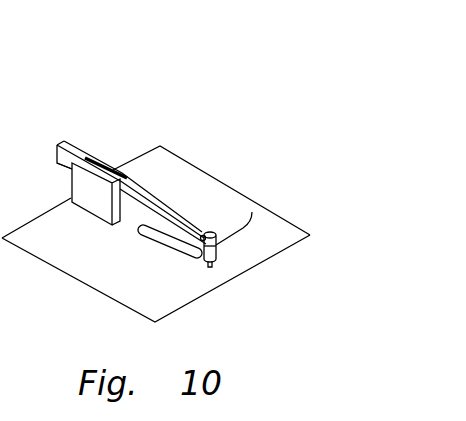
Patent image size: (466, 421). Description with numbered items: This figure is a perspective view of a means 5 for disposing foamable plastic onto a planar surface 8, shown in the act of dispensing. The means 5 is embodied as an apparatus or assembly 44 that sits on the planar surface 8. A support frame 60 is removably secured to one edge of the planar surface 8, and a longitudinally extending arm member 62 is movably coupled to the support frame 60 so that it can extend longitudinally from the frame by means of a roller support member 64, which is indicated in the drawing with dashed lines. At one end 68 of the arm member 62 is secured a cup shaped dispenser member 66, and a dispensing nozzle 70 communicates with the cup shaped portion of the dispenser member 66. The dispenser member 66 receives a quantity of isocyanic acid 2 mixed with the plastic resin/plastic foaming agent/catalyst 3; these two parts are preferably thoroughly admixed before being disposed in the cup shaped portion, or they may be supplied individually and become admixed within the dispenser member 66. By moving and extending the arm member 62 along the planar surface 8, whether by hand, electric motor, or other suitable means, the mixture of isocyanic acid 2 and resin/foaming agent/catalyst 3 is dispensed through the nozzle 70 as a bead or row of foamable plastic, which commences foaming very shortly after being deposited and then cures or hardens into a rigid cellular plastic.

The isocyanic acid 2 is at (210, 267).
The plastic resin/plastic foaming agent/catalyst 3 is at (213, 233).
The means for disposing the foamable plastic 5 is at (82, 131).
The planar surface 8 is at (155, 165).
The apparatus or assembly 44 is at (84, 230).
The support frame 60 is at (101, 161).
The longitudinally extending arm member 62 is at (155, 212).
The roller support member 64 is at (36, 169).
The cup shaped dispenser member 66 is at (252, 212).
The end of the arm member 68 is at (204, 235).
The dispensing nozzle 70 is at (216, 248).